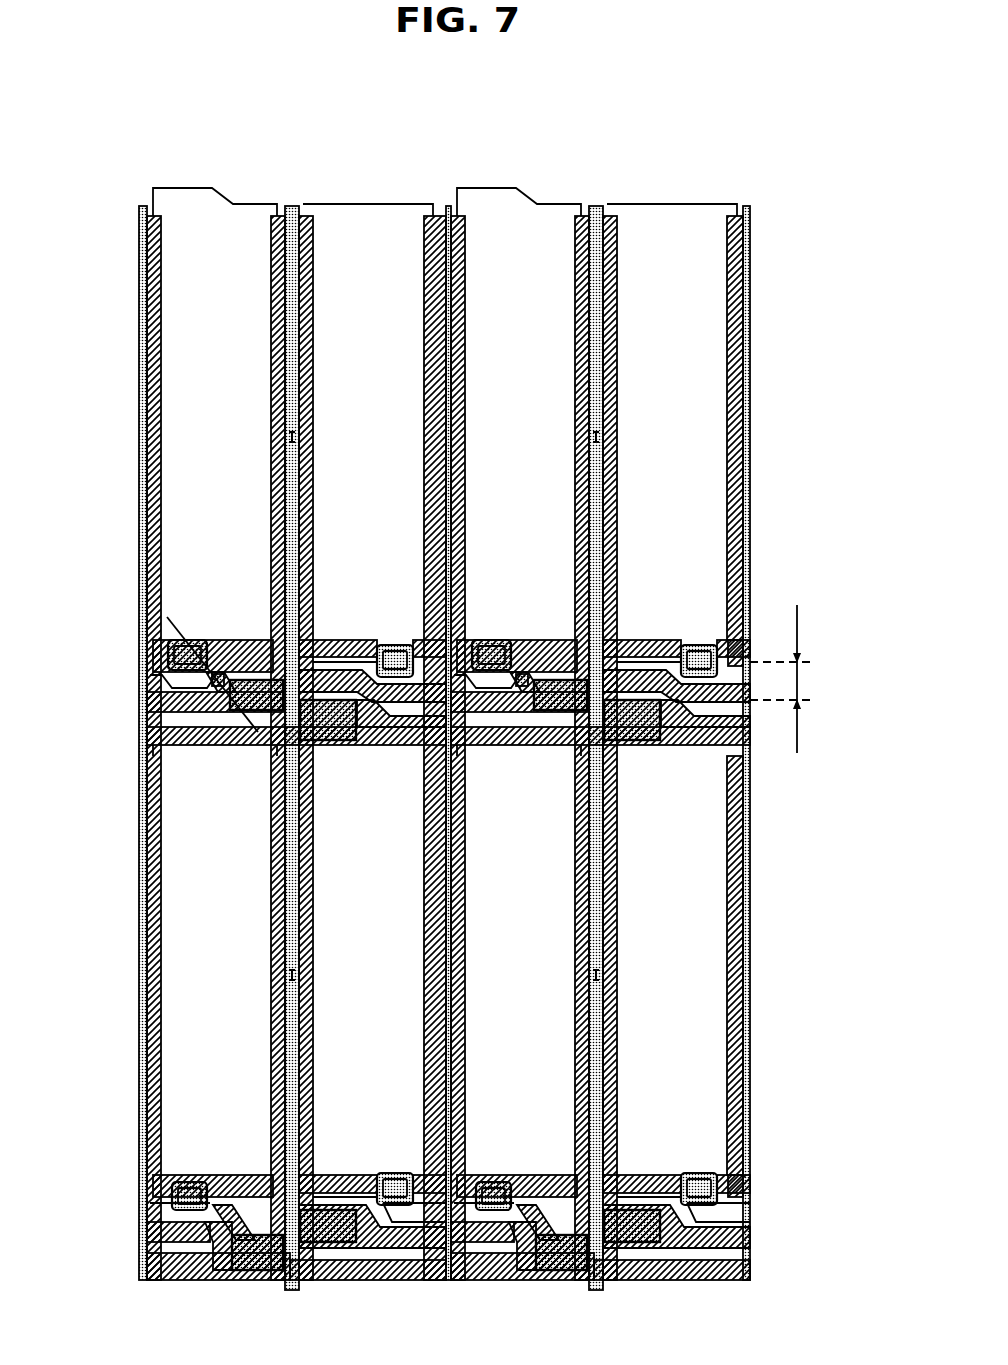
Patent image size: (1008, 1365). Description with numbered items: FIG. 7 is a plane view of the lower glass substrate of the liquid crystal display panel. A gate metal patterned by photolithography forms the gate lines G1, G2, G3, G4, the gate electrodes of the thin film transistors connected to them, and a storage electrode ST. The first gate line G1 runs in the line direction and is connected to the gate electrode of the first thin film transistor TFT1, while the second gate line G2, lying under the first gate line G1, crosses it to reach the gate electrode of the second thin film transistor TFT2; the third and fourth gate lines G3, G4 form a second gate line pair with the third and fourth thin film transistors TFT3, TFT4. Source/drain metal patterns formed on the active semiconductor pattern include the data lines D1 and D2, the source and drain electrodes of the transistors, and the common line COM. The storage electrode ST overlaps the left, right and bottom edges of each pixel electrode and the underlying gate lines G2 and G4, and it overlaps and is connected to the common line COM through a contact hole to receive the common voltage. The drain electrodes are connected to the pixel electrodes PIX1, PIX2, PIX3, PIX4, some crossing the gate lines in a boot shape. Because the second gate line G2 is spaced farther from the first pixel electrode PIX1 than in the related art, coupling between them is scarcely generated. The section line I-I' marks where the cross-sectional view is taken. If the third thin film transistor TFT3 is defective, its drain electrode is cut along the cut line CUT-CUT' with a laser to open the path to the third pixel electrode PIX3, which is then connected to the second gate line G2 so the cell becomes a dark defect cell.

The common line COM is at (143, 205).
The first data line D1 is at (292, 205).
The second data line D2 is at (597, 205).
The first gate line G1 is at (146, 700).
The second gate line G2 is at (146, 735).
The third gate line G3 is at (146, 1226).
The fourth gate line G4 is at (146, 1268).
The storage electrode ST is at (752, 413).
The first thin film transistor TFT1 is at (258, 666).
The second thin film transistor TFT2 is at (330, 698).
The third thin film transistor TFT3 is at (265, 1236).
The fourth thin film transistor TFT4 is at (338, 1204).
The first pixel electrode PIX1 is at (240, 456).
The second pixel electrode PIX2 is at (400, 456).
The third pixel electrode PIX3 is at (240, 979).
The fourth pixel electrode PIX4 is at (400, 979).
The section line I is at (179, 674).
The section line I' is at (221, 763).
The cut line CUT is at (207, 1288).
The cut line CUT' is at (259, 1284).